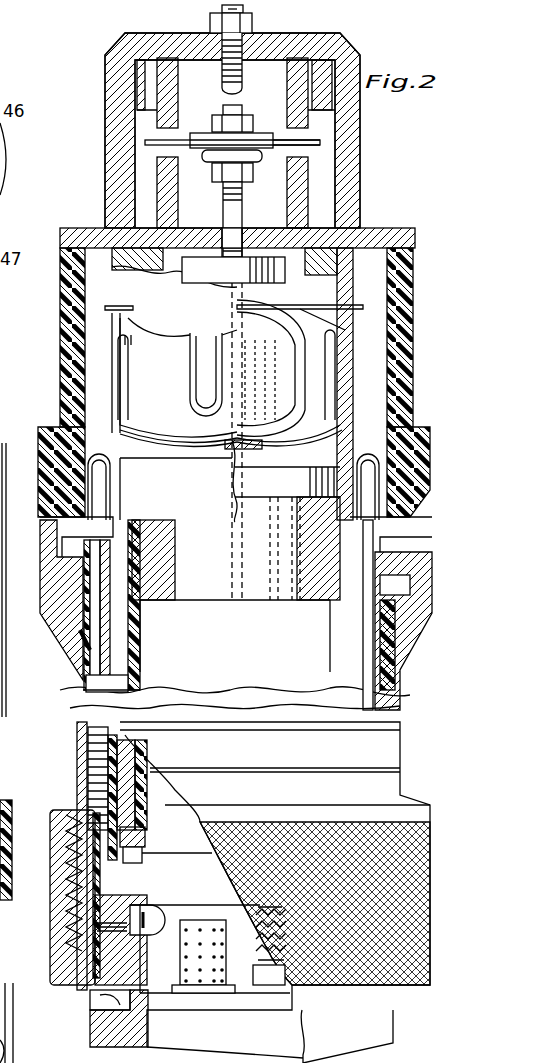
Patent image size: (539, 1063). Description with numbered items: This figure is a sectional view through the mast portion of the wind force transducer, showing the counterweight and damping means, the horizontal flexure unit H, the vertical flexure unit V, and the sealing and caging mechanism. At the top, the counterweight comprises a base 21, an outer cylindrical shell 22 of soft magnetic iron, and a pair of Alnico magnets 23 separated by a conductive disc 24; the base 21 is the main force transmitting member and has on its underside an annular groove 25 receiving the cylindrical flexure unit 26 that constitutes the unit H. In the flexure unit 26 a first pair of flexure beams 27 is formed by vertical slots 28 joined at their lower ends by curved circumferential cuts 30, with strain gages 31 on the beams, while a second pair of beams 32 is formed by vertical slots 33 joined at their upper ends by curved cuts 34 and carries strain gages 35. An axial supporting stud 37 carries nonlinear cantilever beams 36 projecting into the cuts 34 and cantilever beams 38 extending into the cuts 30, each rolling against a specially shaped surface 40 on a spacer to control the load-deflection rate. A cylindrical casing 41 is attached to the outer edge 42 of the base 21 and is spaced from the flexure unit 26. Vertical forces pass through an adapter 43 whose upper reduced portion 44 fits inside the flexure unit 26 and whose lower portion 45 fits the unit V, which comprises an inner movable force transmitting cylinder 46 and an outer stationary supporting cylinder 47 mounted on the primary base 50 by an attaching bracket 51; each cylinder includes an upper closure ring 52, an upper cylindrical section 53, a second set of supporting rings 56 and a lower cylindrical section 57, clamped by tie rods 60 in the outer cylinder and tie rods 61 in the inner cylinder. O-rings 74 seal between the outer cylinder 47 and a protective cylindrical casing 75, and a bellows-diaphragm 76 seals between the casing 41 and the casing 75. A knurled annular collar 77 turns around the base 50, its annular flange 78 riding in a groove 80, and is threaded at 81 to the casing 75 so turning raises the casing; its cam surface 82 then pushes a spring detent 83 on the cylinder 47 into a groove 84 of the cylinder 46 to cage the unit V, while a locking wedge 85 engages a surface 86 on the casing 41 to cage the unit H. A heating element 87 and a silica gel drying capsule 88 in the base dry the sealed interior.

The base 21 is at (366, 230).
The outer cylindrical shell 22 is at (105, 168).
The Alnico magnets 23 is at (172, 99).
The disc 24 is at (168, 150).
The annular groove 25 is at (346, 262).
The cylindrical flexure unit 26 is at (122, 282).
The first pair of flexure beams 27 is at (118, 388).
The vertical cuts or slots 28 is at (126, 368).
The curved circumferential cuts 30 is at (180, 455).
The strain gages 31 is at (128, 342).
The second pair of beams 32 is at (224, 362).
The vertical slot 33 is at (190, 394).
The curved circumferential cuts 34 is at (162, 326).
The strain gages 35 is at (225, 394).
The cantilever beams 36 is at (118, 305).
The axial supporting stud 37 is at (242, 213).
The cantilever beams 38 is at (248, 448).
The specially shaped surface 40 is at (283, 328).
The cylindrical casing 41 is at (60, 287).
The outer edge 42 is at (72, 250).
The adapter 43 is at (265, 595).
The upper reduced portion 44 is at (340, 505).
The lower portion 45 is at (302, 600).
The inner movable force transmitting cylinder 46 is at (325, 655).
The outer stationary supporting cylinder 47 is at (83, 667).
The primary support or base 50 is at (90, 1030).
The attaching bracket 51 is at (140, 901).
The upper closure ring 52 is at (88, 612).
The upper cylindrical section 53 is at (82, 672).
The second set of supporting rings 56 is at (20, 1056).
The lower cylindrical section 57 is at (90, 782).
The tie rods 60 is at (85, 632).
The tie rods 61 is at (132, 617).
The O-rings 74 is at (82, 812).
The protective cylindrical casing 75 is at (400, 685).
The resilient bellows-diaphragm 76 is at (108, 456).
The annular collar 77 is at (400, 985).
The annular flange 78 is at (105, 982).
The groove 80 is at (95, 1002).
The threads 81 is at (70, 907).
The cam surface 82 is at (397, 600).
The spring detent 83 is at (385, 590).
The groove 84 is at (340, 575).
The locking wedge 85 is at (50, 517).
The correspondingly shaped surface 86 is at (40, 493).
The heating element 87 is at (258, 905).
The silica gel drying capsule 88 is at (208, 918).
The horizontal flexure unit H is at (98, 361).
The vertical flexure unit V is at (409, 728).